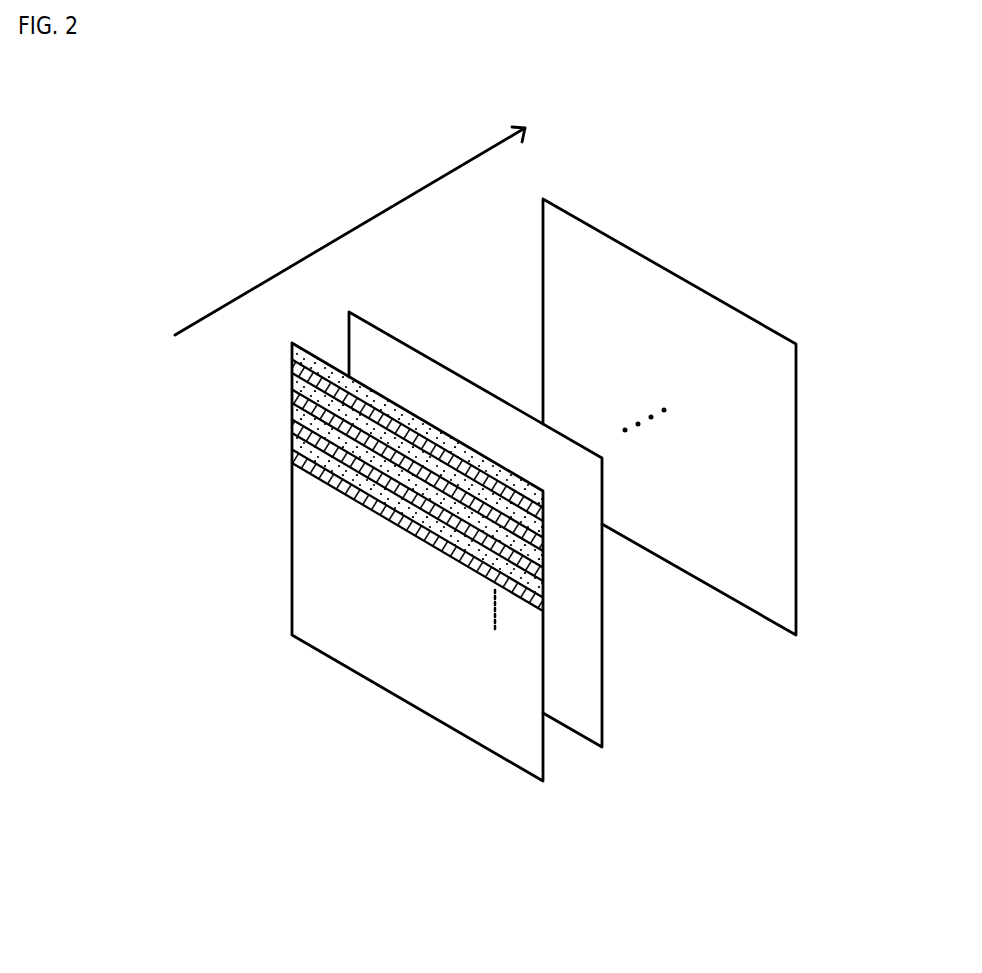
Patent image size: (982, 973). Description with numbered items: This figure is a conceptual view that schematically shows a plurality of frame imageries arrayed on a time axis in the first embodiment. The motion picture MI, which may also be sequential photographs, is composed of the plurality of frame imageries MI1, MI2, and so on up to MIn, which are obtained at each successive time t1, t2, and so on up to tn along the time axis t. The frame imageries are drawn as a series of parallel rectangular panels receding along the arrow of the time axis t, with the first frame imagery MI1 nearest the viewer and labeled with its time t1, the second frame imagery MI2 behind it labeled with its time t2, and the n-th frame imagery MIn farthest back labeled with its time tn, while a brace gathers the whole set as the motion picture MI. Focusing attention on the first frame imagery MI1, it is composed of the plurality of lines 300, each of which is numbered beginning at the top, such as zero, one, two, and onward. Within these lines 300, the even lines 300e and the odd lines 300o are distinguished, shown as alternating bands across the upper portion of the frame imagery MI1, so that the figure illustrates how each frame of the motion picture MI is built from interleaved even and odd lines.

The lines 300 is at (323, 473).
The even lines 300e is at (292, 348).
The odd lines 300o is at (292, 372).
The motion picture MI is at (491, 517).
The frame imagery MI1 is at (362, 564).
The frame imagery MI2 is at (515, 539).
The frame imagery MIn is at (711, 424).
The time axis t is at (350, 231).
The time t1 is at (515, 738).
The time t2 is at (574, 710).
The time tn is at (763, 593).